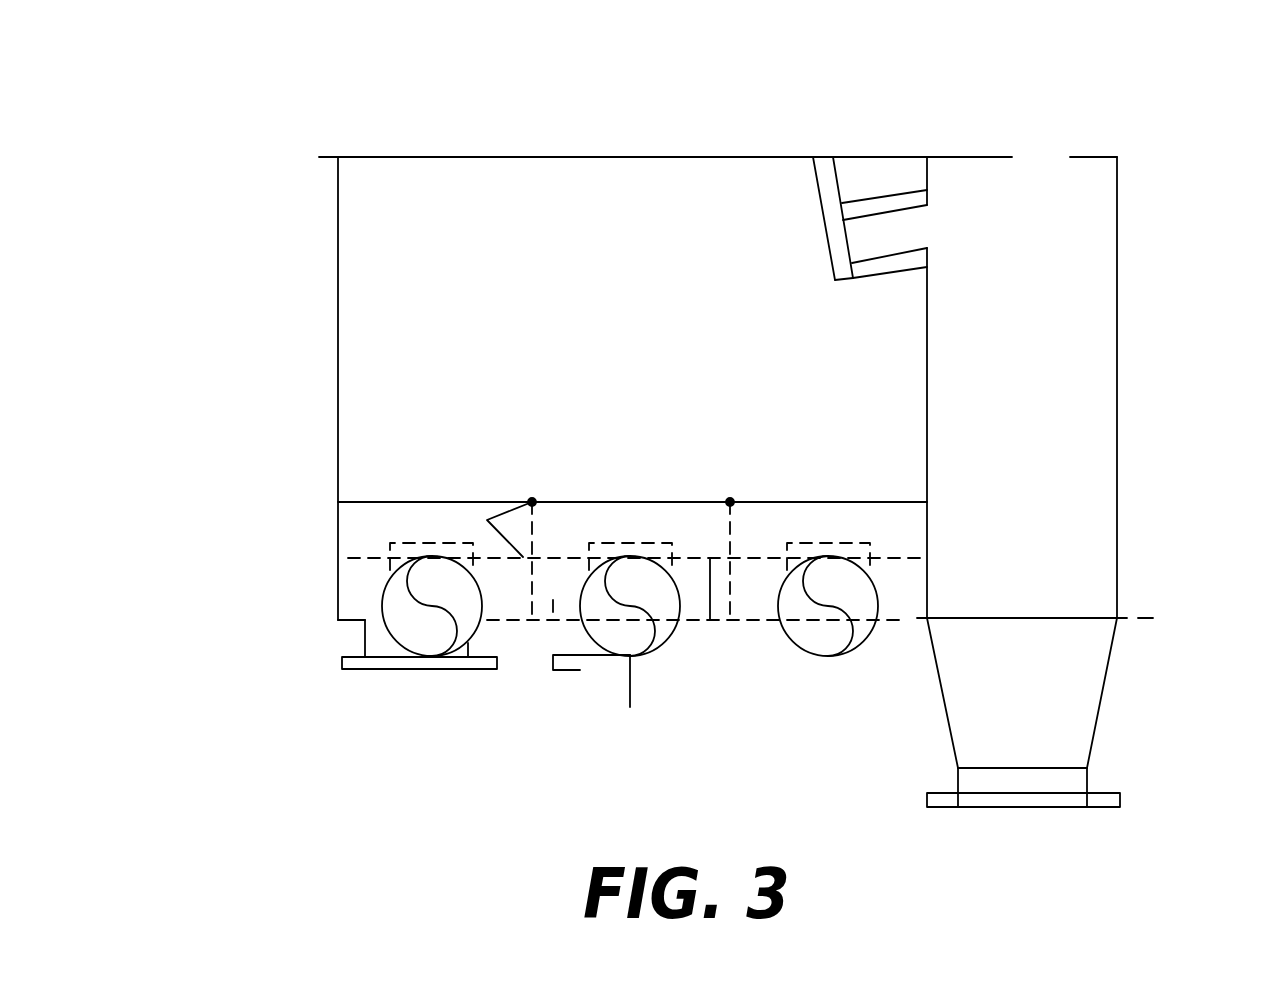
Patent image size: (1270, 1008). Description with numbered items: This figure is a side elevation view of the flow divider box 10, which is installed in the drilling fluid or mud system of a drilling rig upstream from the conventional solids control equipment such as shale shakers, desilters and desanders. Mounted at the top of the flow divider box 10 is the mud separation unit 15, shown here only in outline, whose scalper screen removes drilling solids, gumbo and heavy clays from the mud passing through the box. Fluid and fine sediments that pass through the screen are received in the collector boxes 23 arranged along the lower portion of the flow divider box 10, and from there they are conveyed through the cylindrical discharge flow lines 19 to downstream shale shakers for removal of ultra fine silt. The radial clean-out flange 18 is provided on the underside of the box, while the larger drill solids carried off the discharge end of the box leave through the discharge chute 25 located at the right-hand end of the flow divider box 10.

The flow divider box 10 is at (718, 338).
The mud separation unit 15 is at (762, 157).
The radial clean-out flange 18 is at (387, 668).
The cylindrical discharge flow lines 19 is at (793, 643).
The collector boxes 23 is at (358, 522).
The discharge chute 25 is at (1099, 713).